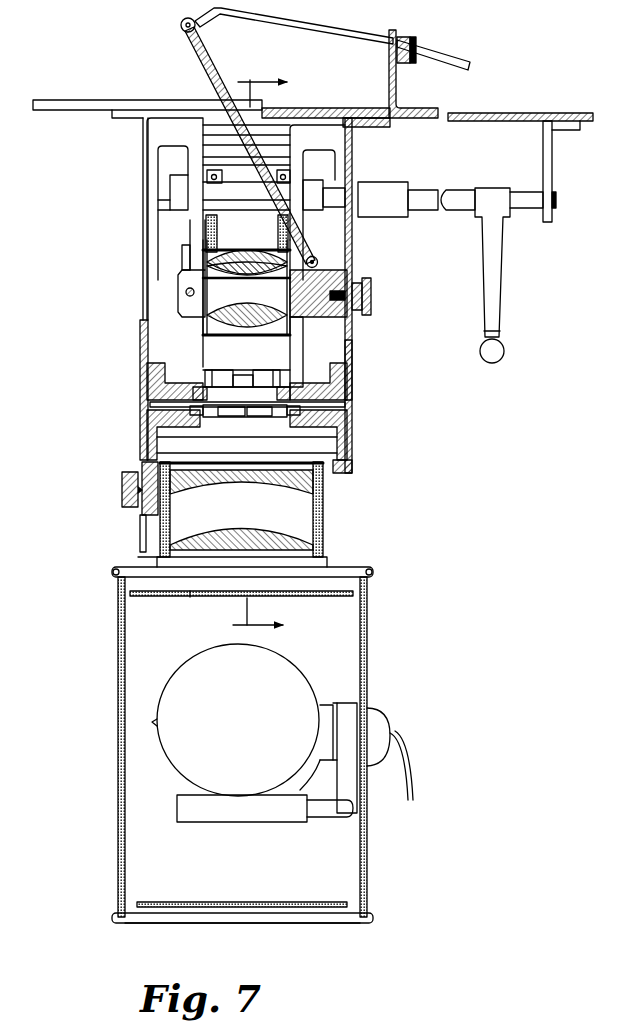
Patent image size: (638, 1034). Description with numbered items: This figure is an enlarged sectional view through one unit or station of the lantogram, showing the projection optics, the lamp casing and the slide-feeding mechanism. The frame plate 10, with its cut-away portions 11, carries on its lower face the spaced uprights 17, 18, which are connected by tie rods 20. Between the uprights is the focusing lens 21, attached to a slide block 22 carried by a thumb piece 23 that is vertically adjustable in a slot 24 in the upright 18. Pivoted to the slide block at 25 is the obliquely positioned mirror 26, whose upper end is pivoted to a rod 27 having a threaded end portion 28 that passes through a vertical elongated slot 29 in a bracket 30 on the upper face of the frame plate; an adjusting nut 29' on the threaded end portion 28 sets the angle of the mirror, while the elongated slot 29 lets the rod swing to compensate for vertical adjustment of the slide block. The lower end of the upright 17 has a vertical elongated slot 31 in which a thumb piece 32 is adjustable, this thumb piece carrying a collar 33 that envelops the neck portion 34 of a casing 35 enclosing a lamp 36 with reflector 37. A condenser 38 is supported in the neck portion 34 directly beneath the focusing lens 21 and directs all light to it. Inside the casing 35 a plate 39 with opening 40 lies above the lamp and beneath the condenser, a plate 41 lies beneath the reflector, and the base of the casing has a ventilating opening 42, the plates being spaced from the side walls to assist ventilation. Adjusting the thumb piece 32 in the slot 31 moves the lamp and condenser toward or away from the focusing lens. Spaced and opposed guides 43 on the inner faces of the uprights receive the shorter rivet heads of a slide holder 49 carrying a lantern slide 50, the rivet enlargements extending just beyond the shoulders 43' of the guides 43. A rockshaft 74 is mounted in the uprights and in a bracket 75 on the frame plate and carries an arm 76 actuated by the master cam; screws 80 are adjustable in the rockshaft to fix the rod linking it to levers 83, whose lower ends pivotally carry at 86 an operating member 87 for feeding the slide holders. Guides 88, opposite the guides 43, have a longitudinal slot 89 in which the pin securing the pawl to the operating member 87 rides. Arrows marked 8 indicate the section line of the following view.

The section line 8 is at (260, 346).
The frame plate 10 is at (592, 113).
The cut-away portions 11 is at (50, 100).
The upright 17 is at (147, 337).
The upright 18 is at (352, 248).
The tie rods 20 is at (158, 158).
The focusing lens 21 is at (227, 297).
The slide block 22 is at (338, 322).
The thumb piece 23 is at (371, 295).
The slot 24 is at (352, 360).
The pivot 25 is at (314, 258).
The mirror 26 is at (210, 70).
The rod 27 is at (359, 32).
The threaded end portion 28 is at (452, 58).
The vertical elongated slot 29 is at (380, 53).
The adjusting nut 29' is at (430, 44).
The bracket 30 is at (397, 94).
The vertical elongated slot 31 is at (140, 534).
The thumb piece 32 is at (122, 495).
The collar 33 is at (142, 467).
The neck portion 34 is at (138, 557).
The casing 35 is at (118, 637).
The lamp 36 is at (300, 693).
The reflector 37 is at (287, 815).
The condenser 38 is at (297, 522).
The plate 39 is at (150, 597).
The opening 40 is at (197, 593).
The plate 41 is at (211, 902).
The ventilating opening 42 is at (170, 923).
The guides 43 is at (238, 435).
The shoulders 43' is at (247, 431).
The slide holder 49 is at (261, 417).
The lantern slide 50 is at (223, 418).
The rockshaft 74 is at (471, 192).
The bracket 75 is at (546, 171).
The arm 76 is at (488, 253).
The screws 80 is at (282, 237).
The levers 83 is at (296, 356).
The pivot 86 is at (245, 380).
The operating member 87 is at (208, 377).
The guides 88 is at (152, 391).
The longitudinal slot 89 is at (195, 378).